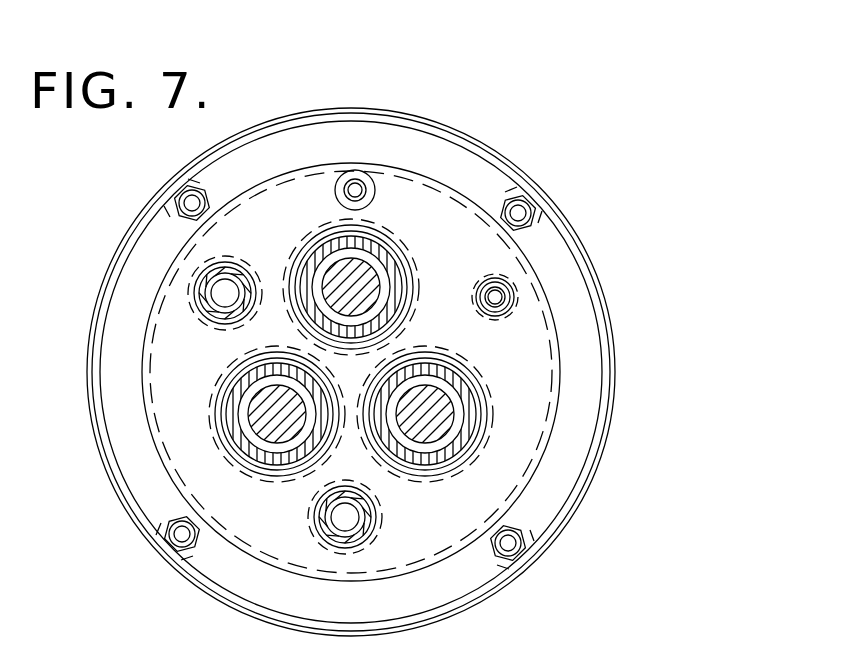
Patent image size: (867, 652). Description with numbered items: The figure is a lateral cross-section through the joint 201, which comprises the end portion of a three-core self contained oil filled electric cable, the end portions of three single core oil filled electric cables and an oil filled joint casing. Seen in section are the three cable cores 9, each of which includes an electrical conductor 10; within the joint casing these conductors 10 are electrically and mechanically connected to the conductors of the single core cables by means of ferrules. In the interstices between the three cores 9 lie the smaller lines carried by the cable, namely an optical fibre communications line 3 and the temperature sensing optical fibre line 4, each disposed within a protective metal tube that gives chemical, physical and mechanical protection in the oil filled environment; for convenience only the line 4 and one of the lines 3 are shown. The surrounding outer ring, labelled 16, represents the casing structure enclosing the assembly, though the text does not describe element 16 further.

The optical fibre communications line 3 is at (236, 293).
The temperature sensing optical fibre line 4 is at (495, 297).
The cable core 9 is at (366, 290).
The electrical conductor 10 is at (289, 414).
The outer sheath 16 is at (90, 442).
The joint 201 is at (608, 269).